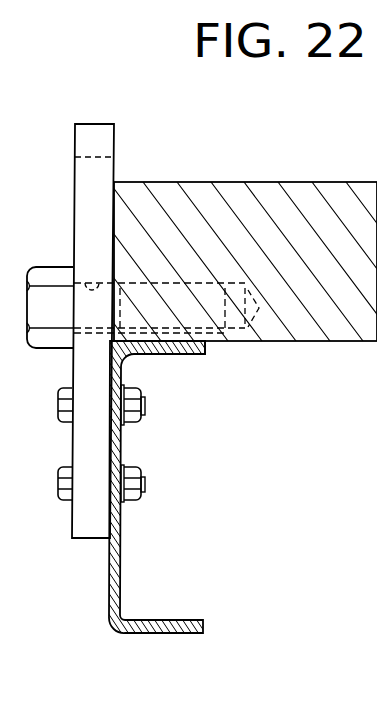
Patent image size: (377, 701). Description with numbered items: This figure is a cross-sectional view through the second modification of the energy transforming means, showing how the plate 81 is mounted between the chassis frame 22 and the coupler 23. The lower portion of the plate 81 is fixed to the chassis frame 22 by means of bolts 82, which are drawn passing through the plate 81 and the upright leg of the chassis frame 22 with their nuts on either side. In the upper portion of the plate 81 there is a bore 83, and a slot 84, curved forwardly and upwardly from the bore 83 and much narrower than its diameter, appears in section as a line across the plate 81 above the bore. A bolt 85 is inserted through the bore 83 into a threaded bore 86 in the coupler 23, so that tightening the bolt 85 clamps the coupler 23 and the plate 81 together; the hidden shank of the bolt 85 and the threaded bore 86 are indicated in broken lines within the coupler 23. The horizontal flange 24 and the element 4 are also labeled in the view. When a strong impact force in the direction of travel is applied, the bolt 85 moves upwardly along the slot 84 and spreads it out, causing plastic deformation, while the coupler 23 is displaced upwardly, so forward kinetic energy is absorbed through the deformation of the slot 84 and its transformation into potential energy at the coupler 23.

The frame 4 is at (5, 340).
The chassis frame 22 is at (110, 573).
The coupler 23 is at (232, 182).
The flange 24 is at (206, 350).
The plate 81 is at (95, 124).
The bolts 82 is at (57, 479).
The bore 83 is at (104, 283).
The slot 84 is at (89, 160).
The bolt 85 is at (52, 267).
The threaded bore 86 is at (197, 298).